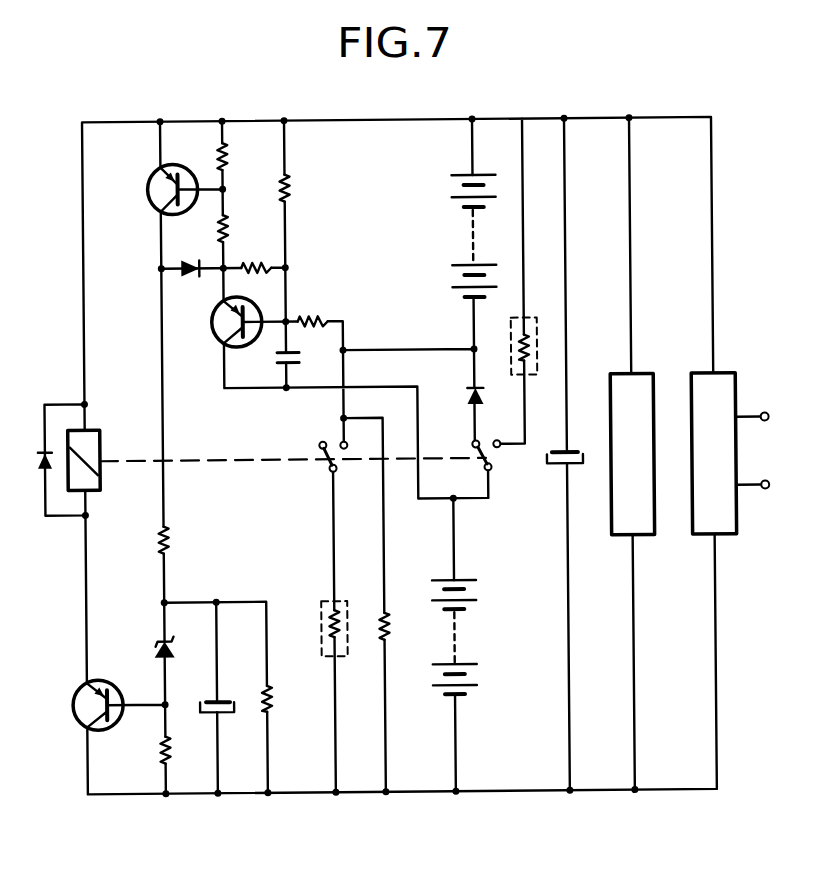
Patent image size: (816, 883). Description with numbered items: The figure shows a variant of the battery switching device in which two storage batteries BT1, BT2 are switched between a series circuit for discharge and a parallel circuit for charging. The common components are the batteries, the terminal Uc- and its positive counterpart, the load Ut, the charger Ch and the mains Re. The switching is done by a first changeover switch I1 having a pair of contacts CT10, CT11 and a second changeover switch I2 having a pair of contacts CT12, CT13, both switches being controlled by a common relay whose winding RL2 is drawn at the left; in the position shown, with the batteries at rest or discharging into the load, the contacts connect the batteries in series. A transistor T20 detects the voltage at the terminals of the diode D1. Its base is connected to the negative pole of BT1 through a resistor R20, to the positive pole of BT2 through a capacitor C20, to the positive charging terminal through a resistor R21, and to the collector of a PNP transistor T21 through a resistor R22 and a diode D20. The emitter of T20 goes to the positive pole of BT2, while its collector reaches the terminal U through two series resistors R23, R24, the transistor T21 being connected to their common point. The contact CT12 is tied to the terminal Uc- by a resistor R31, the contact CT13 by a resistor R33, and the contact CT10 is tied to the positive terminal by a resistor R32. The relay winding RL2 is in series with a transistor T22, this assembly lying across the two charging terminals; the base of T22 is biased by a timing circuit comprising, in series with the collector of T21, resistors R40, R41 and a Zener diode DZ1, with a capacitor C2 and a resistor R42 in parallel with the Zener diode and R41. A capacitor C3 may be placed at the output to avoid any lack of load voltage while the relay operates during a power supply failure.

The PNP transistor T21 is at (148, 187).
The NPN transistor T20 is at (211, 331).
The NPN transistor T22 is at (70, 693).
The resistor R24 is at (262, 156).
The resistor R23 is at (226, 230).
The resistor R22 is at (259, 262).
The resistor R21 is at (290, 180).
The resistor R20 is at (306, 314).
The resistor R40 is at (200, 548).
The resistor R41 is at (158, 753).
The resistor R42 is at (304, 688).
The resistor R33 is at (318, 624).
The resistor R31 is at (419, 631).
The resistor R32 is at (510, 314).
The diode D20 is at (193, 261).
The diode D1 is at (468, 395).
The Zener diode DZ1 is at (155, 640).
The relay winding RL2 is at (99, 442).
The capacitor C20 is at (276, 355).
The capacitor C2 is at (211, 698).
The capacitor C3 is at (569, 452).
The storage battery BT1 is at (471, 252).
The storage battery BT2 is at (452, 656).
The second changeover switch I2 is at (329, 464).
The first changeover switch I1 is at (483, 456).
The contact CT10 is at (516, 475).
The contact CT11 is at (470, 446).
The contact CT12 is at (343, 449).
The contact CT13 is at (318, 449).
The load Ut is at (628, 522).
The charger Ch is at (711, 521).
The mains Re is at (757, 450).
The supply terminal U is at (470, 103).
The negative terminal Uc- is at (647, 805).